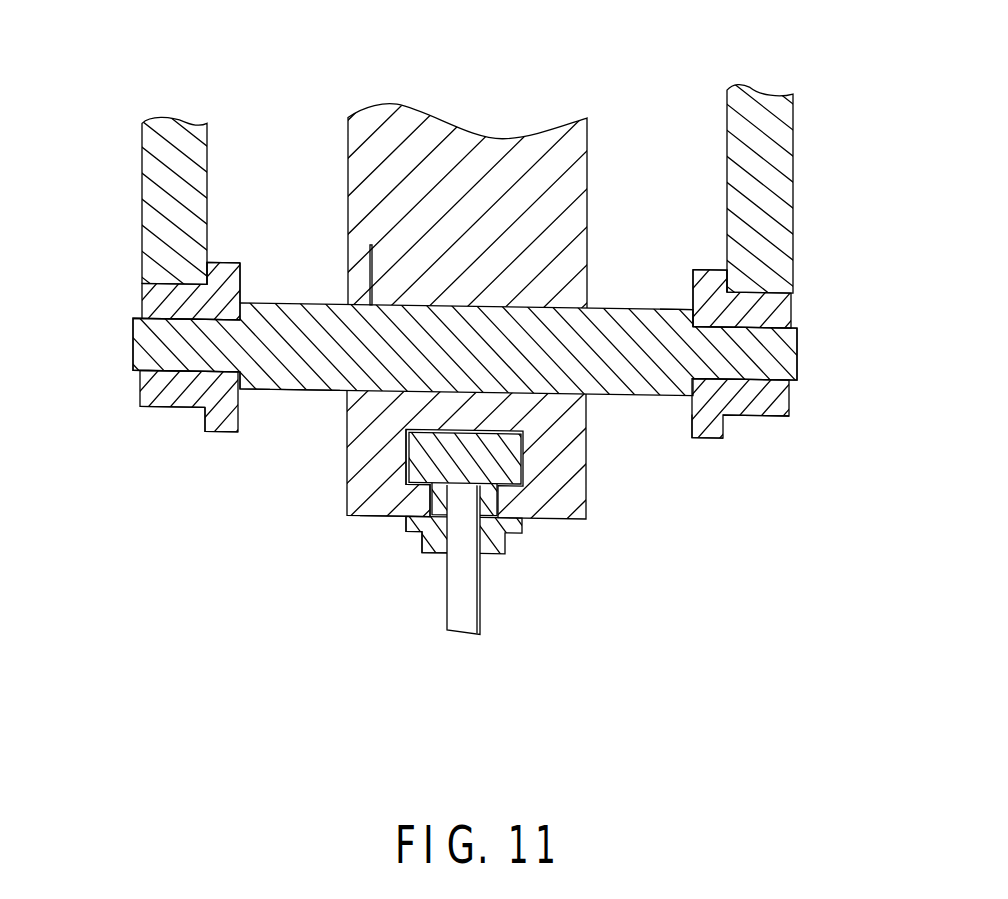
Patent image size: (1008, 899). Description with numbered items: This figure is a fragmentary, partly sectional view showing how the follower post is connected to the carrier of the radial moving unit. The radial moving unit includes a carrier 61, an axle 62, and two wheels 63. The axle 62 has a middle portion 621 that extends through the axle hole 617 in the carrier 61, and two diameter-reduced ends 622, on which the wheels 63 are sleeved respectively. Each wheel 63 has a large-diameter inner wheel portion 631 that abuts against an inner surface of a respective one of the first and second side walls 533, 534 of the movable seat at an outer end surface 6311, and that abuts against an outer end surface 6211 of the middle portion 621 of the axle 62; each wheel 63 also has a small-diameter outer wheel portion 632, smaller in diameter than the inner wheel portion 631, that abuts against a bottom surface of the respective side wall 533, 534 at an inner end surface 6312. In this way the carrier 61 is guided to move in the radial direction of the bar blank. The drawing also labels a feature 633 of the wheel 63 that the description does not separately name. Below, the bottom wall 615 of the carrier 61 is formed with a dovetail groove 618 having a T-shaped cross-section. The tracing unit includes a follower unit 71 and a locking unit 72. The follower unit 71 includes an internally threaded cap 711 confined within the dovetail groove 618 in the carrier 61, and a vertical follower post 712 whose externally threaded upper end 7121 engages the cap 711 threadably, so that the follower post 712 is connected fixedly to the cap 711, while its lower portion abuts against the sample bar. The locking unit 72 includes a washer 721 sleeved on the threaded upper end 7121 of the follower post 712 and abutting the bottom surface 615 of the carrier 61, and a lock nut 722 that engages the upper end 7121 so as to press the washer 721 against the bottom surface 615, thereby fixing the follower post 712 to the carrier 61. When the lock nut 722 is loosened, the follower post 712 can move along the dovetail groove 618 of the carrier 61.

The carrier 61 is at (345, 122).
The axle hole 617 is at (373, 227).
The first side wall 533 is at (147, 163).
The second side wall 534 is at (780, 120).
The wheel 63 is at (232, 262).
The outer end surface 6311 is at (217, 262).
The inner end surface 6312 is at (241, 272).
The axle 62 is at (312, 300).
The diameter-reduced end 622 is at (140, 343).
The outer end surface 6211 is at (255, 390).
The retaining ring 633 is at (153, 375).
The outer wheel portion 632 is at (173, 407).
The inner wheel portion 631 is at (217, 428).
The middle portion 621 is at (306, 374).
The dovetail groove 618 is at (385, 517).
The bottom wall 615 is at (392, 514).
The follower unit 71 is at (523, 443).
The internally threaded cap 711 is at (505, 457).
The follower post 712 is at (480, 608).
The externally threaded upper end 7121 is at (468, 579).
The locking unit 72 is at (503, 537).
The washer 721 is at (402, 527).
The lock nut 722 is at (435, 548).